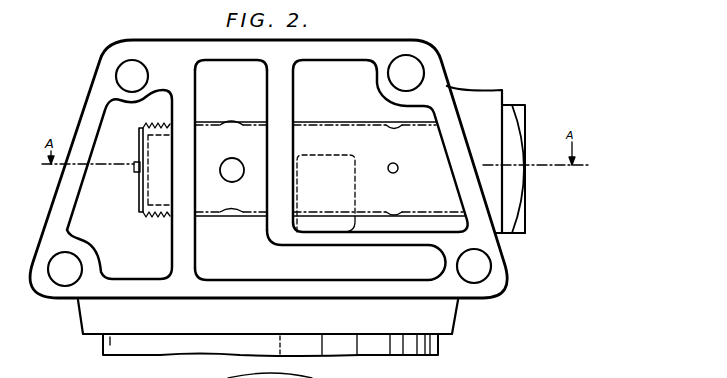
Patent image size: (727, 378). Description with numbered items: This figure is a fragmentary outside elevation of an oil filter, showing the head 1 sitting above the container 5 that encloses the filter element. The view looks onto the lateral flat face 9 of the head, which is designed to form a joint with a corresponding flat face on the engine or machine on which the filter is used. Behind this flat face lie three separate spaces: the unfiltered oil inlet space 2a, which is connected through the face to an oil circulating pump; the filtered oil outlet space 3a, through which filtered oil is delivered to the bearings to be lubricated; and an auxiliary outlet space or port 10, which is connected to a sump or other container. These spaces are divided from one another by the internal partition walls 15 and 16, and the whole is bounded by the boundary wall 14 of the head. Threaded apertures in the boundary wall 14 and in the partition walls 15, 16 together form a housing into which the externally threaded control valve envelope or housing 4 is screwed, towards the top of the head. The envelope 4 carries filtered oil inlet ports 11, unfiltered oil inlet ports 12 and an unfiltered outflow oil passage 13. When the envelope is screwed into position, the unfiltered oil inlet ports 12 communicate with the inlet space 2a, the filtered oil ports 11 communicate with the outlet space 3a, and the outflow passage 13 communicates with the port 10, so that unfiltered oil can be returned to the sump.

The head 1 is at (467, 97).
The inlet space 2a is at (257, 258).
The outlet space 3a is at (342, 67).
The control valve envelope or housing 4 is at (308, 137).
The container 5 is at (418, 338).
The lateral flat face 9 is at (80, 137).
The auxiliary outlet space or port 10 is at (153, 268).
The filtered oil inlet ports 11 is at (398, 171).
The unfiltered oil inlet ports 12 is at (238, 175).
The unfiltered outflow oil passage 13 is at (139, 172).
The boundary wall 14 is at (490, 190).
The internal partition wall 15 is at (273, 99).
The internal partition wall 16 is at (187, 253).